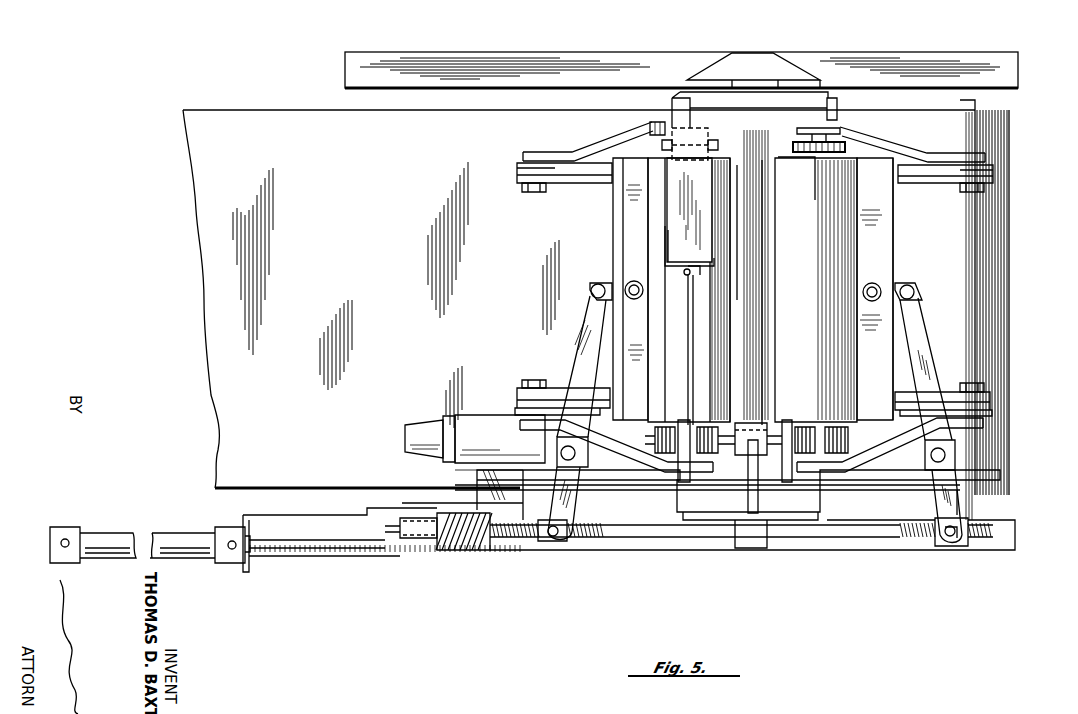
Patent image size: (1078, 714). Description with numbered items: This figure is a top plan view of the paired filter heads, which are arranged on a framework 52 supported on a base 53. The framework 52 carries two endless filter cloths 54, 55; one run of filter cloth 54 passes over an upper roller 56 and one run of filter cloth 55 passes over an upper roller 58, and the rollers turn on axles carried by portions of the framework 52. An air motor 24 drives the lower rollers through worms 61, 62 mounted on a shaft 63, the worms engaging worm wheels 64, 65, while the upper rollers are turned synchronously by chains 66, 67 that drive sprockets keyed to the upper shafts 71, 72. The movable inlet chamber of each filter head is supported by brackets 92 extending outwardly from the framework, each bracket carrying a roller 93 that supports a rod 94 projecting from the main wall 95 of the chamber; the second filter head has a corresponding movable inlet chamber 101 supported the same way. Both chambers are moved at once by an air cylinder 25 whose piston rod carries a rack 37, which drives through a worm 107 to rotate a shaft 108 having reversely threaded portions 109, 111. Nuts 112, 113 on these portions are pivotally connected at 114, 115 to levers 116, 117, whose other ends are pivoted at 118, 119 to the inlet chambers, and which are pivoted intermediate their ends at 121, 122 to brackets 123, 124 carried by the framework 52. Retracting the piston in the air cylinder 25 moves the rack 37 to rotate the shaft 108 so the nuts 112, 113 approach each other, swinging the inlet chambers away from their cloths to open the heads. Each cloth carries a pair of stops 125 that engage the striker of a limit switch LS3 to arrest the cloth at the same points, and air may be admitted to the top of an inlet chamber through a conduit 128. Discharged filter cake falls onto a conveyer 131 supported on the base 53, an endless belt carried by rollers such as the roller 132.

The air motor 24 is at (456, 420).
The air cylinder 25 is at (110, 556).
The rack 37 is at (303, 550).
The framework 52 is at (756, 92).
The base 53 is at (519, 53).
The endless filter cloth 54 is at (726, 380).
The endless filter cloth 55 is at (776, 378).
The upper roller 56 is at (664, 162).
The upper roller 58 is at (787, 158).
The worm 61 is at (667, 426).
The worm 62 is at (799, 426).
The shaft 63 is at (771, 450).
The worm wheel 64 is at (720, 430).
The worm wheel 65 is at (848, 445).
The chain 66 is at (660, 132).
The chain 67 is at (840, 146).
The upper shaft 71 is at (694, 130).
The upper shaft 72 is at (812, 128).
The bracket 92 is at (525, 157).
The roller 93 is at (521, 190).
The rod 94 is at (592, 184).
The main wall 95 is at (614, 228).
The movable inlet chamber 101 is at (893, 246).
The worm 107 is at (452, 550).
The shaft 108 is at (848, 538).
The reversely threaded portion 109 is at (528, 539).
The reversely threaded portion 111 is at (915, 538).
The nut 112 is at (542, 542).
The nut 113 is at (960, 540).
The pivotal connection 114 is at (556, 540).
The pivotal connection 115 is at (948, 540).
The lever 116 is at (585, 532).
The lever 117 is at (943, 500).
The pivot 118 is at (597, 284).
The pivot 119 is at (910, 284).
The pivot 121 is at (576, 458).
The pivot 122 is at (930, 455).
The bracket 123 is at (638, 478).
The bracket 124 is at (890, 478).
The stop 125 is at (816, 265).
The conduit 128 is at (641, 295).
The conveyer 131 is at (215, 488).
The roller 132 is at (1009, 112).
The limit switch LS3 is at (684, 274).